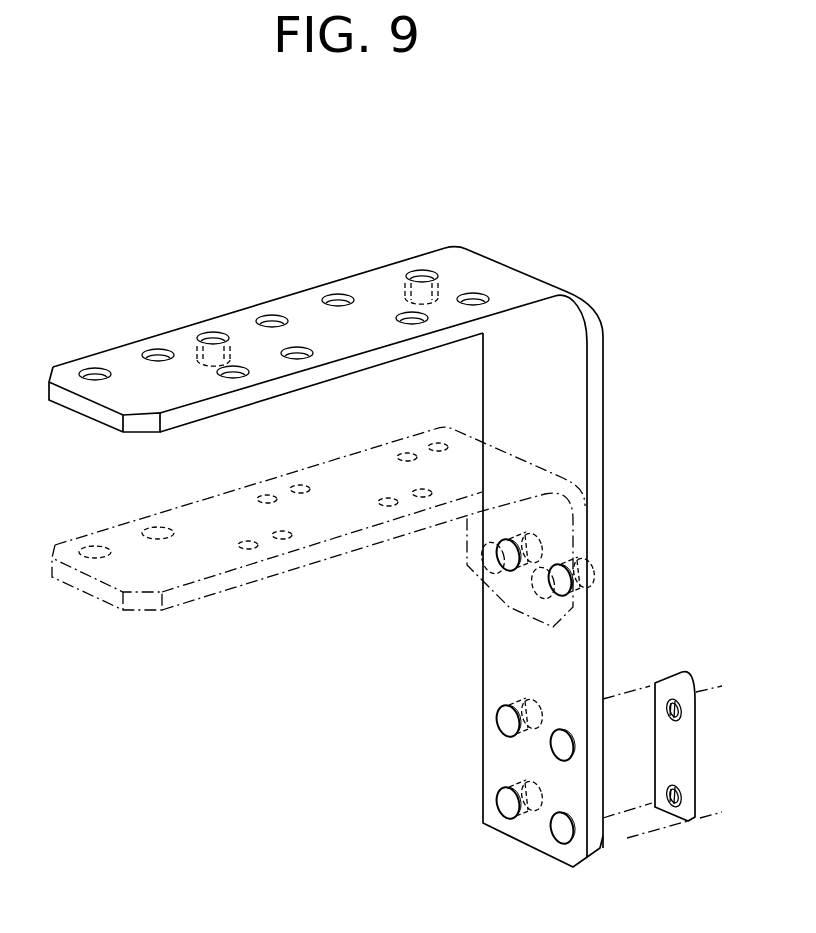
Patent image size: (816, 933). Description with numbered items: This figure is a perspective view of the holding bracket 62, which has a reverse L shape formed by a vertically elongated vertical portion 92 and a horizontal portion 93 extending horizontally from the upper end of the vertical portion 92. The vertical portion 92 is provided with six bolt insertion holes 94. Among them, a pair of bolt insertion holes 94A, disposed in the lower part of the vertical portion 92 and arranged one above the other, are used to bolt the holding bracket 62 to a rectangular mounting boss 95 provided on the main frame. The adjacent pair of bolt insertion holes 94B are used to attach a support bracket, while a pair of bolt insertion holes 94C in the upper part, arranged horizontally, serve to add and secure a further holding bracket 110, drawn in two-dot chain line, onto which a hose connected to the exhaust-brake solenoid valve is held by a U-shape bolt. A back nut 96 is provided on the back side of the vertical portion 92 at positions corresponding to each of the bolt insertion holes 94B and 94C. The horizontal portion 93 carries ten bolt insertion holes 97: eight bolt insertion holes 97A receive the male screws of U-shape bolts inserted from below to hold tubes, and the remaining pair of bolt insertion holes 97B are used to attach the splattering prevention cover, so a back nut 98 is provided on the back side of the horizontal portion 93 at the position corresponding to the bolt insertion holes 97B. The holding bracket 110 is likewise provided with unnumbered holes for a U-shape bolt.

The holding bracket 62 is at (310, 212).
The horizontal portion 93 is at (228, 315).
The vertical portion 92 is at (605, 478).
The bolt insertion holes 97 is at (263, 312).
The bolt insertion holes 97A is at (272, 316).
The bolt insertion holes 97B is at (198, 338).
The back nut 98 is at (215, 368).
The bolt insertion holes 94 is at (540, 732).
The bolt insertion holes 94A is at (568, 737).
The bolt insertion holes 94B is at (498, 721).
The bolt insertion holes 94C is at (498, 557).
The back nut 96 is at (545, 541).
The mounting boss 95 is at (720, 806).
The holding bracket 110 is at (207, 612).